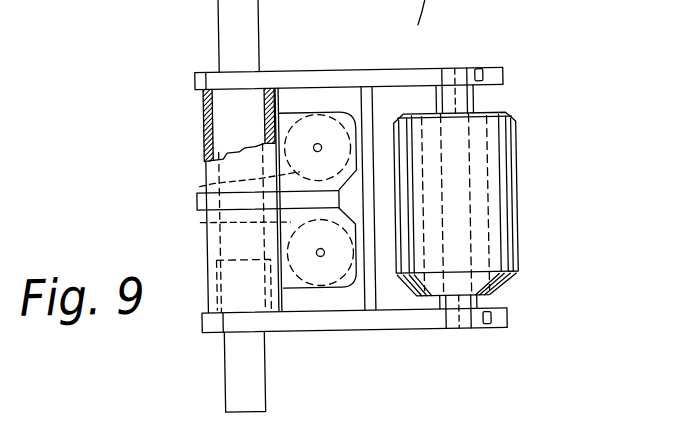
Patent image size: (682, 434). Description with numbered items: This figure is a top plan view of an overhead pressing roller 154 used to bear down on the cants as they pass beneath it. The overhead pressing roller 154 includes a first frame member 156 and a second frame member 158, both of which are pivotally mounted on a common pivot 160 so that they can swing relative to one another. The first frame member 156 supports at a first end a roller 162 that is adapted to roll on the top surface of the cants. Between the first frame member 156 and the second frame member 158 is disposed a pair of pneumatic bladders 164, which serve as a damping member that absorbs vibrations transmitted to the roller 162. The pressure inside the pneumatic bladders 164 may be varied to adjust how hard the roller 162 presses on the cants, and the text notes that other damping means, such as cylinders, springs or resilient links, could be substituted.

The overhead pressing roller 154 is at (544, 82).
The first frame member 156 is at (335, 78).
The second frame member 158 is at (204, 130).
The common pivot 160 is at (234, 116).
The roller 162 is at (495, 184).
The pneumatic bladders 164 is at (200, 184).